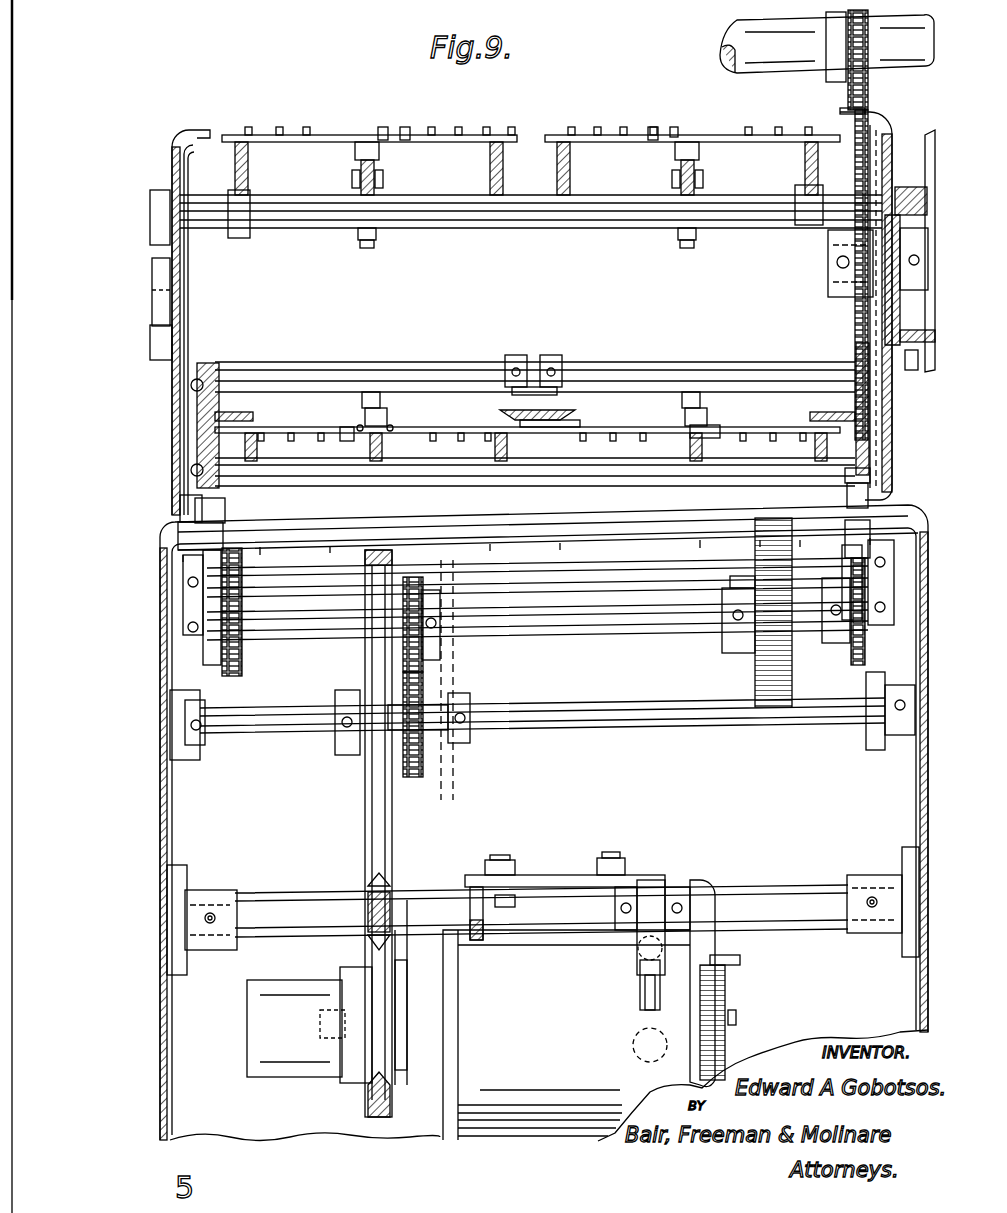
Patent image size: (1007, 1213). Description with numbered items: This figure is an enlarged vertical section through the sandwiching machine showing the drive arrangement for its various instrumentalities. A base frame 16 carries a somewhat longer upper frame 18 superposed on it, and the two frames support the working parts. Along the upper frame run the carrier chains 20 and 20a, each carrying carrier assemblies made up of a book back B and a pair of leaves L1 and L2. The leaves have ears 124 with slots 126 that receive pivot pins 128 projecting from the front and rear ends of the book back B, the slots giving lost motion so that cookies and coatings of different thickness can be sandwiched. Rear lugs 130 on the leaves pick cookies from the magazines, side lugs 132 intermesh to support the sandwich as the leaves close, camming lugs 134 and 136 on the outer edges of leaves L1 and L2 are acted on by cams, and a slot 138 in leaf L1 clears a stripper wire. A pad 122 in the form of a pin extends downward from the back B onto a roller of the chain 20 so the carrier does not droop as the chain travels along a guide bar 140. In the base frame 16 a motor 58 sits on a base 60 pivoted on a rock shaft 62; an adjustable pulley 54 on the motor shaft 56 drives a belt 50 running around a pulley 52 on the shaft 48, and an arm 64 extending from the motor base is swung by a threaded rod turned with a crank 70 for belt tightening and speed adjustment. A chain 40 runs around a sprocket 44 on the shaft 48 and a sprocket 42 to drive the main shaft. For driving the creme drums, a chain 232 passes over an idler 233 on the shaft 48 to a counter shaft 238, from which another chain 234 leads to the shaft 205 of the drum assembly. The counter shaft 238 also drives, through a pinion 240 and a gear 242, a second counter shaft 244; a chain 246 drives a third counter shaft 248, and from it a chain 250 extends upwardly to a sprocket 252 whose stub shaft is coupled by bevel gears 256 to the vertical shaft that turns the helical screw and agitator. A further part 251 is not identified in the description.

The base frame 16 is at (165, 532).
The upper frame 18 is at (182, 135).
The chain 20 is at (368, 142).
The chain 20a is at (700, 145).
The chain 40 is at (440, 775).
The sprocket 42 is at (448, 661).
The sprocket 44 is at (455, 745).
The shaft 48 is at (520, 728).
The belt 50 is at (380, 548).
The pulley 52 is at (368, 818).
The adjustable pulley 54 is at (365, 967).
The motor shaft 56 is at (330, 1040).
The motor 58 is at (560, 1055).
The motor base 60 is at (553, 876).
The rock shaft 62 is at (758, 900).
The arm 64 is at (637, 975).
The crank 70 is at (635, 1055).
The pad 122 is at (390, 425).
The ears 124 is at (706, 127).
The slots 126 is at (385, 130).
The pivot pins 128 is at (405, 130).
The rear lugs 130 is at (280, 125).
The side lugs 132 is at (652, 127).
The camming lugs 134 is at (222, 135).
The camming lugs 136 is at (535, 453).
The slot 138 is at (632, 125).
The guide bar 140 is at (365, 195).
The shaft 205 is at (805, 50).
The chain 232 is at (405, 660).
The idler 233 is at (405, 745).
The chain 234 is at (868, 98).
The counter shaft 238 is at (627, 628).
The pinion 240 is at (752, 655).
The gear 242 is at (792, 675).
The second counter shaft 244 is at (800, 620).
The chain 246 is at (860, 665).
The third counter shaft 248 is at (550, 575).
The chain 250 is at (855, 332).
The bearing block 251 is at (860, 560).
The sprocket 252 is at (828, 292).
The bevel gears 256 is at (925, 290).
The book back B is at (688, 127).
The leaf L1 is at (268, 135).
The leaf L2 is at (420, 135).